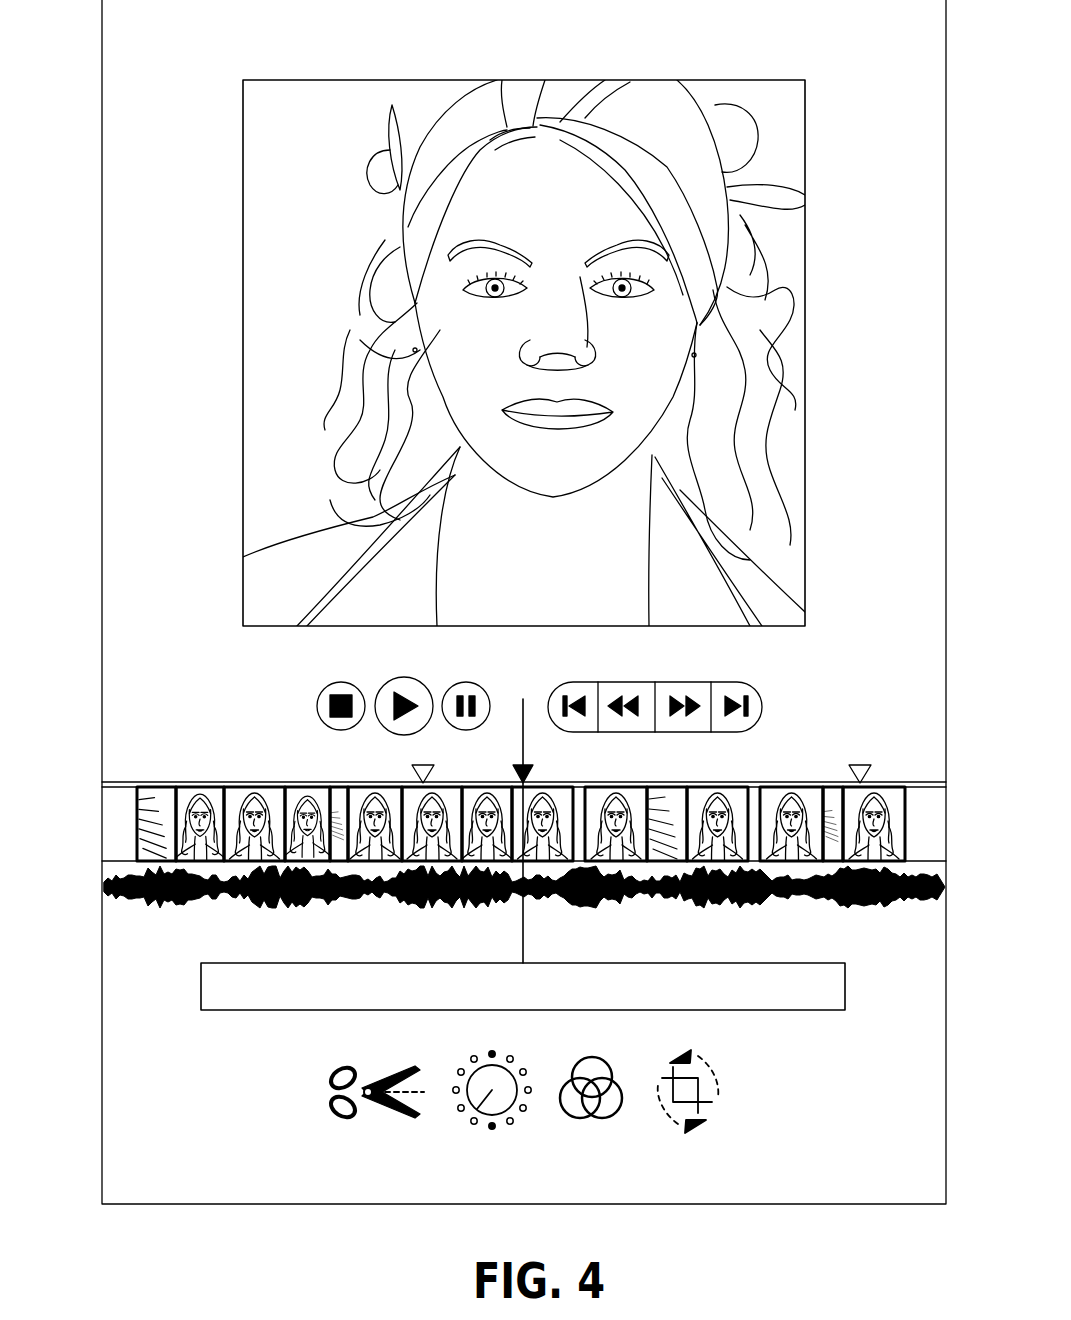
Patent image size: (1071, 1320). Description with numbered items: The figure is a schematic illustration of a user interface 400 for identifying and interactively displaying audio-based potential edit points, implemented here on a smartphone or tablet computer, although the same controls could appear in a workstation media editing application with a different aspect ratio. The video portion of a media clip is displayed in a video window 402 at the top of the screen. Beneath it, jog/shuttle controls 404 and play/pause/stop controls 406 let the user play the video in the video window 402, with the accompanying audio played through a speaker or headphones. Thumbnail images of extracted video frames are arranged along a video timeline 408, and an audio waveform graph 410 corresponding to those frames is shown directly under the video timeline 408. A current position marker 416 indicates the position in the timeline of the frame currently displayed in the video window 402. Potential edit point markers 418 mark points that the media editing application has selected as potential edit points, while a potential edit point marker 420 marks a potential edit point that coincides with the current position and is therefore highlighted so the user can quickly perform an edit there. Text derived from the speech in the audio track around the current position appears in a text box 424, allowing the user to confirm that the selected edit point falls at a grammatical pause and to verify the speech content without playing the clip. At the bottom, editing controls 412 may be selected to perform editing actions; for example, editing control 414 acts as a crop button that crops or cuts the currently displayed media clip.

The user interface 400 is at (102, 140).
The video window 402 is at (805, 268).
The jog/shuttle controls 404 is at (762, 705).
The play/pause/stop controls 406 is at (500, 683).
The video timeline 408 is at (255, 783).
The audio waveform graph 410 is at (192, 895).
The editing controls 412 is at (501, 1122).
The editing control 414 is at (343, 1092).
The current position marker 416 is at (525, 945).
The potential edit point markers 418 is at (412, 765).
The potential edit point marker 420 is at (530, 766).
The text box 424 is at (845, 992).